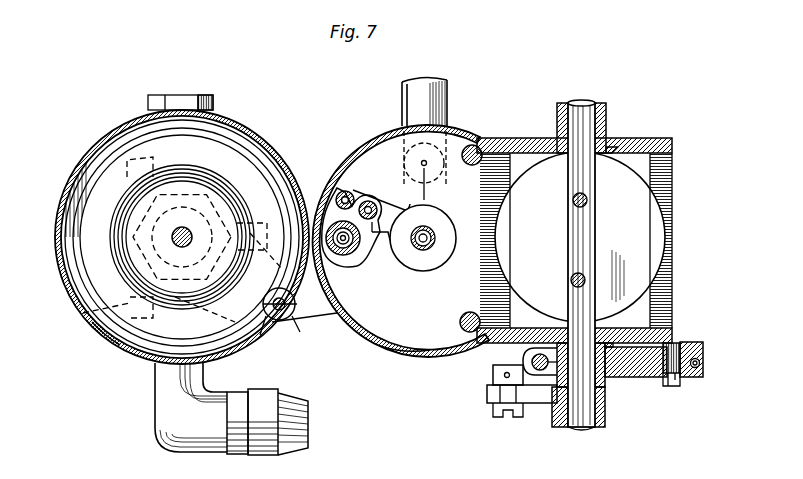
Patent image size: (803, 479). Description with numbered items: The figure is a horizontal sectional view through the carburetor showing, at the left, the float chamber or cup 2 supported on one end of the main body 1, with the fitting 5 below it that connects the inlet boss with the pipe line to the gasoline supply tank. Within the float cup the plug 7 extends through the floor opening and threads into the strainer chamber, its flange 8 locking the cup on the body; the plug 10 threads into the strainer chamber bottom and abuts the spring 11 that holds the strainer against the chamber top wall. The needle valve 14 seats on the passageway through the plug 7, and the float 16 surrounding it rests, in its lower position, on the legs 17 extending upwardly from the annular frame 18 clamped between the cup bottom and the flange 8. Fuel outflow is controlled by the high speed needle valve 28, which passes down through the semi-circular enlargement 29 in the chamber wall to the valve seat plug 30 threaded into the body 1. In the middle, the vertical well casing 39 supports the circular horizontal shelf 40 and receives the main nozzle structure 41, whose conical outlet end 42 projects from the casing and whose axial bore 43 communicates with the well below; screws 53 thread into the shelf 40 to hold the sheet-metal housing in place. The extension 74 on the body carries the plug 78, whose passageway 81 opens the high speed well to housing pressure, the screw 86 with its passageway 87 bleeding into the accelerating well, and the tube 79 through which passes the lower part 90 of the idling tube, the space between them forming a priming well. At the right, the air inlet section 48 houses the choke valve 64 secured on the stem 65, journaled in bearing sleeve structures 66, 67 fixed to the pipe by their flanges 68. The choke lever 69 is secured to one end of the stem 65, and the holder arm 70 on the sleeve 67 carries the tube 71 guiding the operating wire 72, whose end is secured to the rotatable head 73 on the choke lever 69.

The main body 1 is at (320, 314).
The float chamber 2 is at (250, 137).
The fitting 5 is at (157, 392).
The plug 7 is at (70, 272).
The flange 8 is at (302, 191).
The plug 10 is at (66, 146).
The spring 11 is at (418, 68).
The needle valve 14 is at (184, 233).
The float 16 is at (103, 293).
The legs 17 is at (110, 340).
The annular frame 18 is at (177, 292).
The high speed needle valve 28 is at (297, 318).
The semi-circular enlargement 29 is at (292, 330).
The valve seat plug 30 is at (263, 335).
The well casing 39 is at (422, 262).
The circular horizontal shelf 40 is at (401, 330).
The main nozzle structure 41 is at (420, 358).
The outlet end 42 is at (406, 250).
The axial bore 43 is at (428, 236).
The air inlet section 48 is at (603, 229).
The screws 53 is at (472, 166).
The choke valve 64 is at (657, 233).
The stem 65 is at (590, 272).
The bearing sleeve structure 66 is at (600, 103).
The bearing sleeve structure 67 is at (607, 384).
The flanges 68 is at (607, 142).
The choke lever 69 is at (537, 395).
The holder arm 70 is at (643, 383).
The tube 71 is at (705, 366).
The operating wire 72 is at (703, 353).
The rotatable head 73 is at (493, 373).
The extension 74 is at (360, 190).
The plug 78 is at (373, 250).
The tube 79 is at (353, 252).
The passageway 81 is at (370, 206).
The screw 86 is at (341, 195).
The passageway 87 is at (346, 195).
The idling tube 90 is at (342, 255).